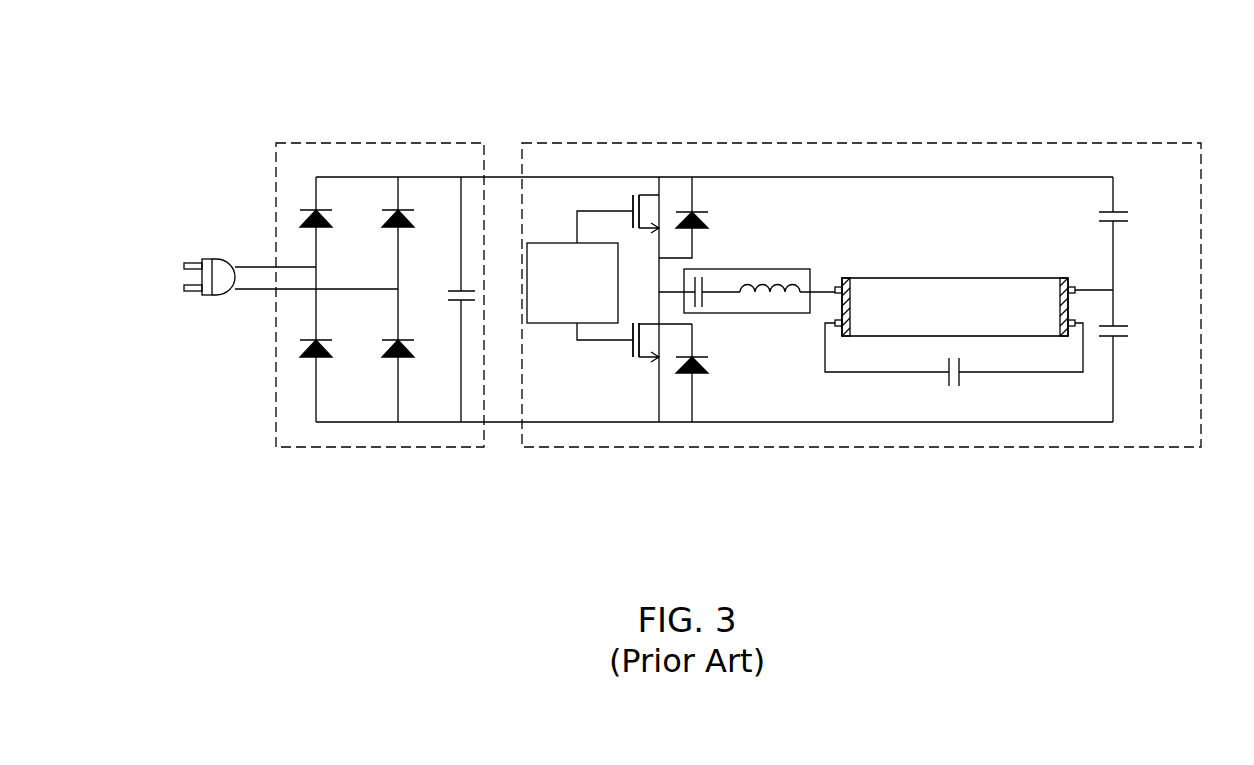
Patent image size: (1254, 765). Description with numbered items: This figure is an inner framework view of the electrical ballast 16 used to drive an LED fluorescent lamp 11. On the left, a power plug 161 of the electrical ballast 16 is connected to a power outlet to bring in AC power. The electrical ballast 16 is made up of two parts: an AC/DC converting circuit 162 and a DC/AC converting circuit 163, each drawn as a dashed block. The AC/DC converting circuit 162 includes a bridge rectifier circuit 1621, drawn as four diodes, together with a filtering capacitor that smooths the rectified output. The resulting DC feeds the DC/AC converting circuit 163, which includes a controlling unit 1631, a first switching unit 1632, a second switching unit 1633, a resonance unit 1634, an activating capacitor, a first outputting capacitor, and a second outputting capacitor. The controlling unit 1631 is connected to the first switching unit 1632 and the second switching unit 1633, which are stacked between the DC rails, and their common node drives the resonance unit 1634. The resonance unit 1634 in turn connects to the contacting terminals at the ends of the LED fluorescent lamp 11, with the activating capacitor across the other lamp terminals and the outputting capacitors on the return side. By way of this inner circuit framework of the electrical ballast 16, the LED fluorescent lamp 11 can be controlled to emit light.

The electrical ballast 16 is at (492, 138).
The power plug 161 is at (185, 289).
The AC/DC converting circuit 162 is at (302, 447).
The bridge rectifier circuit 1621 is at (398, 213).
The DC/AC converting circuit 163 is at (815, 449).
The controlling unit 1631 is at (600, 301).
The first switching unit 1632 is at (698, 212).
The second switching unit 1633 is at (685, 372).
The resonance unit 1634 is at (762, 308).
The LED fluorescent lamp 11 is at (957, 290).